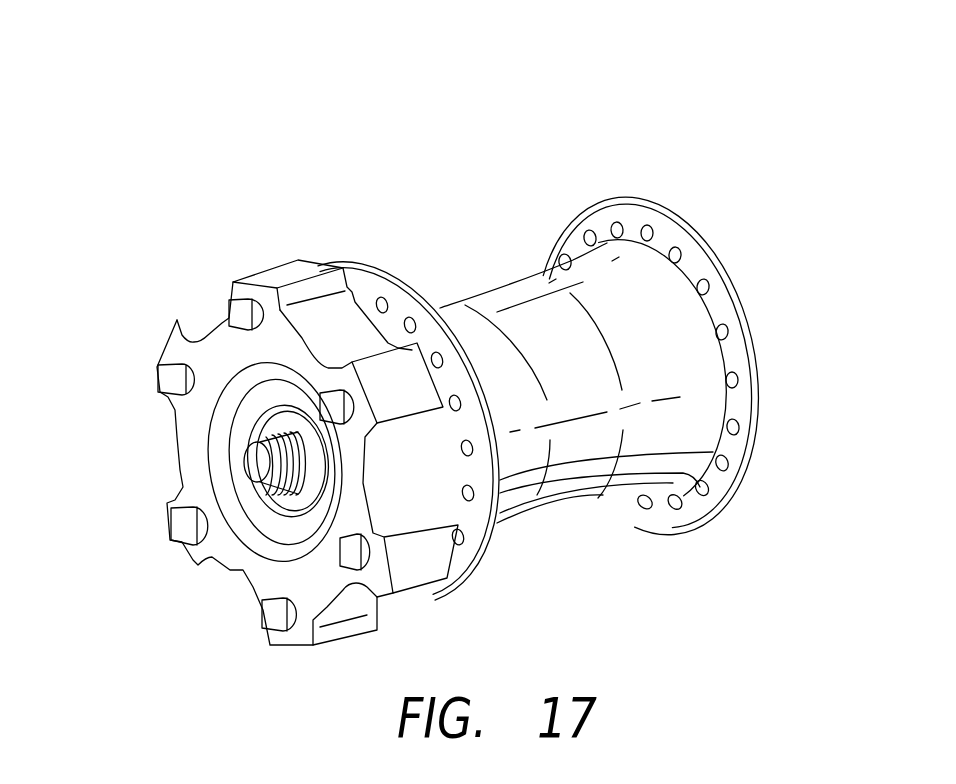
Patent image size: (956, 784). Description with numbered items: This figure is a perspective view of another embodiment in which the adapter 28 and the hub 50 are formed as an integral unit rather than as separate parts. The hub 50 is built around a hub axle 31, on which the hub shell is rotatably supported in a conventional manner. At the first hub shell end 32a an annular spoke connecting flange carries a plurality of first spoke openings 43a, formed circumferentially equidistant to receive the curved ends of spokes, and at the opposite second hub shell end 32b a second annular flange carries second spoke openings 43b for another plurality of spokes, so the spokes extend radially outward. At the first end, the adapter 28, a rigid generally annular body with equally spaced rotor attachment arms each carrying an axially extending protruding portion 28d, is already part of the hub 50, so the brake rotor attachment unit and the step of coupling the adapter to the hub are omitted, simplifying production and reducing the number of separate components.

The hub 50 is at (200, 130).
The adapter 28 is at (244, 567).
The protruding portion 28d is at (160, 375).
The hub axle 31 is at (262, 462).
The first hub shell end 32a is at (393, 272).
The second hub shell end 32b is at (670, 290).
The first spoke openings 43a is at (463, 450).
The second spoke openings 43b is at (733, 387).